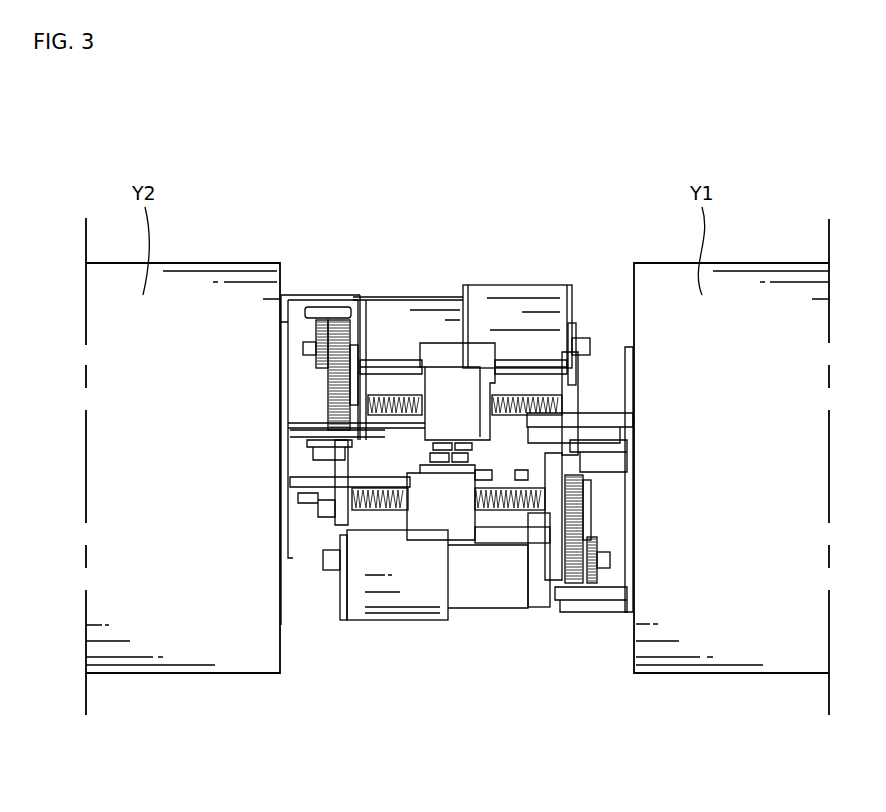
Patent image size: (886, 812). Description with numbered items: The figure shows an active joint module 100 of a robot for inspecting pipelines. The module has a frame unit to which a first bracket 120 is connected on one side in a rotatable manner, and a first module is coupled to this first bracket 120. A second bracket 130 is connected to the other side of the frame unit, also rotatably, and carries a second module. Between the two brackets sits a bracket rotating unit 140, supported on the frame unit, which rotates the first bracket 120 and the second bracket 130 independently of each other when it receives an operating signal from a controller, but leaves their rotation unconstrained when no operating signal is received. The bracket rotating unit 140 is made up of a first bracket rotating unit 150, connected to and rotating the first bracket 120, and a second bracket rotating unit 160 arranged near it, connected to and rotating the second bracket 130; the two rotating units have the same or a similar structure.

The active joint module 100 is at (280, 177).
The first bracket 120 is at (628, 567).
The second bracket 130 is at (285, 337).
The bracket rotating unit 140 is at (540, 222).
The first bracket rotating unit 150 is at (510, 378).
The second bracket rotating unit 160 is at (405, 462).